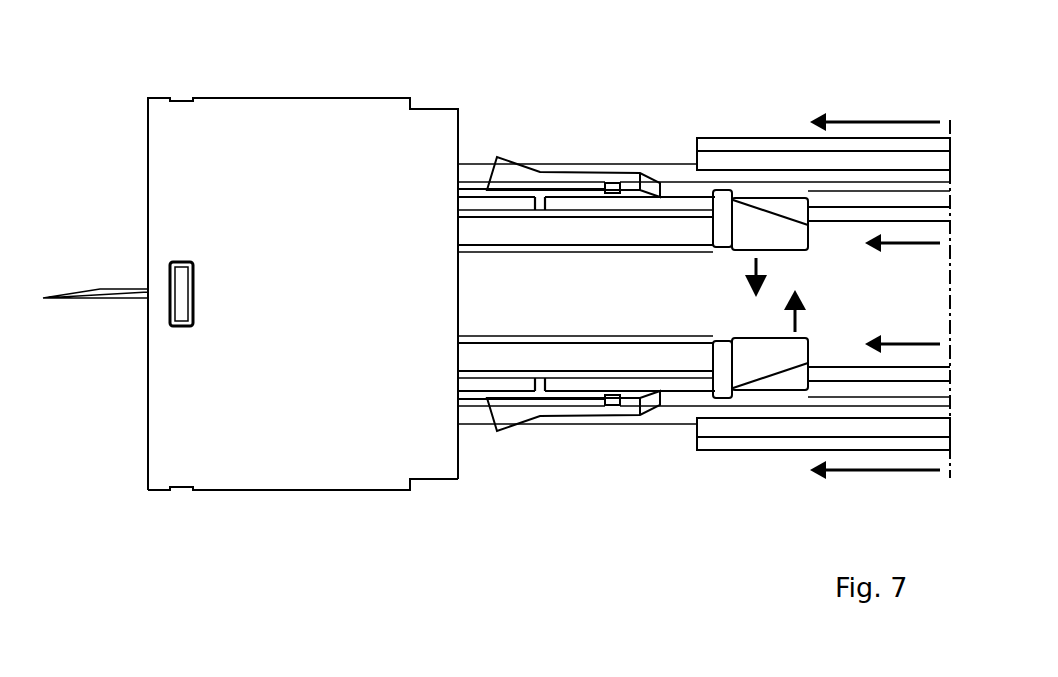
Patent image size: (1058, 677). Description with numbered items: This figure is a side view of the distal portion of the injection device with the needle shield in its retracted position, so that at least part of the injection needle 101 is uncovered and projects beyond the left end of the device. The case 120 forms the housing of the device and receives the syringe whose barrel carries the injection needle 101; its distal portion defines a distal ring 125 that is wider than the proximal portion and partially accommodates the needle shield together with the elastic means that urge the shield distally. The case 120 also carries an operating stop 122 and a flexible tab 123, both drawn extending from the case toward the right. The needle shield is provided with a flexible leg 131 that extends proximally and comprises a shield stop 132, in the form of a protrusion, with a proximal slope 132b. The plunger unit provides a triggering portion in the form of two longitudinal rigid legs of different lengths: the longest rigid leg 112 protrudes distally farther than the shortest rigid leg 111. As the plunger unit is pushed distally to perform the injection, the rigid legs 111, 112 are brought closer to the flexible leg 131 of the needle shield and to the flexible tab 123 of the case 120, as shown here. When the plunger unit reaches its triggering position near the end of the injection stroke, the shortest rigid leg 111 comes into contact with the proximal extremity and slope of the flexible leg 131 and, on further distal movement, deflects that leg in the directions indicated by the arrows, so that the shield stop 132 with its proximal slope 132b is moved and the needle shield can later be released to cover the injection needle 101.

The injection needle 101 is at (85, 298).
The case 120 is at (368, 150).
The flexible tab 123 is at (508, 168).
The distal ring 125 is at (380, 465).
The flexible leg 131 is at (630, 232).
The operating stop 122 is at (544, 200).
The longest rigid leg 112 is at (745, 150).
The shortest rigid leg 111 is at (822, 203).
The shield stop 132 is at (725, 228).
The proximal slope 132b is at (772, 220).